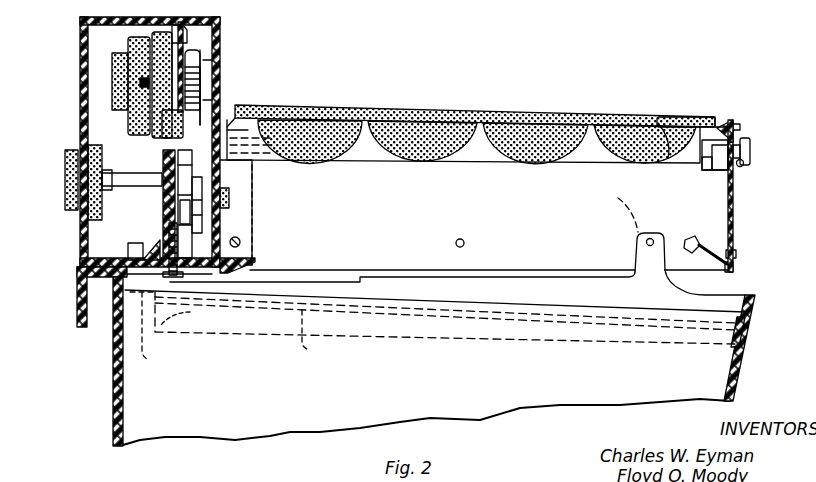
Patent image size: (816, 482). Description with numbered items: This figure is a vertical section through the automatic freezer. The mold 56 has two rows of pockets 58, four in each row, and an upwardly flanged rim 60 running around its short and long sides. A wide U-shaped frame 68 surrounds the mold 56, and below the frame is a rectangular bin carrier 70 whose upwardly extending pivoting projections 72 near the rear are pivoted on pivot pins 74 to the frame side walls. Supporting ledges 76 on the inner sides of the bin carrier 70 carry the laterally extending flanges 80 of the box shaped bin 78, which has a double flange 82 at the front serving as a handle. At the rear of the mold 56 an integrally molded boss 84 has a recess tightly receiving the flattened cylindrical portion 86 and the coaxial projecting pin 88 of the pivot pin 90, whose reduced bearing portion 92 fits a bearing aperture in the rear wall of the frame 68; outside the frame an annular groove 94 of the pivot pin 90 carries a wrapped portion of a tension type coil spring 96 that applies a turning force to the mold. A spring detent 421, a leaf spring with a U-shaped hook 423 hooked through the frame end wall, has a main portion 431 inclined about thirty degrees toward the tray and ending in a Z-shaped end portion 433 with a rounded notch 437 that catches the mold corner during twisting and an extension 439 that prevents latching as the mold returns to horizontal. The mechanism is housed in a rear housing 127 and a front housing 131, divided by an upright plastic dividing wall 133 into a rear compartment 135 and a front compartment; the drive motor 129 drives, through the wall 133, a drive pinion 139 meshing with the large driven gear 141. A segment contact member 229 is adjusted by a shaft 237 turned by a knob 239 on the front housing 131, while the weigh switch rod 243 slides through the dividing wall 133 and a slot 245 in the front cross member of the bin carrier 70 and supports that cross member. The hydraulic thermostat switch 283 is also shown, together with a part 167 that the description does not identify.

The mold 56 is at (455, 110).
The pockets 58 is at (388, 146).
The upwardly flanged rim 60 is at (672, 115).
The U-shaped frame 68 is at (736, 254).
The bin carrier 70 is at (756, 313).
The pivoting projections 72 is at (643, 257).
The pivot pins 74 is at (615, 209).
The supporting ledges 76 is at (445, 335).
The bin 78 is at (113, 402).
The laterally extending flanges 80 is at (152, 334).
The double flange 82 is at (78, 327).
The boss 84 is at (720, 170).
The flattened cylindrical portion 86 is at (707, 167).
The coaxial projecting pin 88 is at (698, 122).
The pivot pin 90 is at (750, 160).
The bearing portion 92 is at (736, 126).
The annular groove 94 is at (752, 145).
The tension type coil spring 96 is at (741, 167).
The rear housing 127 is at (220, 54).
The drive motor 129 is at (128, 42).
The front housing 131 is at (80, 105).
The upright dividing wall 133 is at (162, 165).
The rear compartment 135 is at (207, 37).
The drive pinion 139 is at (215, 98).
The large driven gear 141 is at (240, 246).
The bearing 167 is at (238, 187).
The segment contact member 229 is at (202, 216).
The shaft 237 is at (153, 182).
The knob 239 is at (72, 196).
The weigh switch rod 243 is at (172, 277).
The slot 245 is at (168, 258).
The hydraulic thermostat switch 283 is at (277, 165).
The spring detent 421 is at (449, 263).
The U-shaped hook 423 is at (733, 267).
The main portion 431 is at (733, 238).
The Z-shaped end portion 433 is at (705, 283).
The rounded notch 437 is at (710, 249).
The extension 439 is at (688, 243).